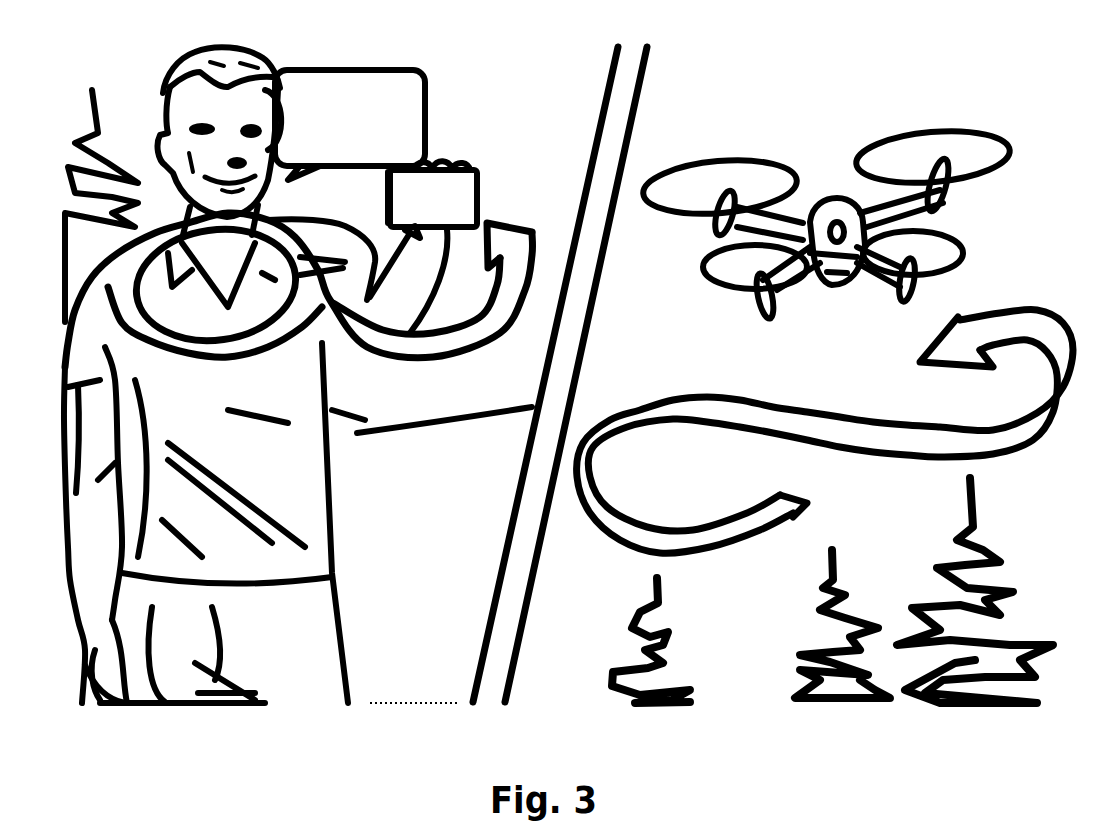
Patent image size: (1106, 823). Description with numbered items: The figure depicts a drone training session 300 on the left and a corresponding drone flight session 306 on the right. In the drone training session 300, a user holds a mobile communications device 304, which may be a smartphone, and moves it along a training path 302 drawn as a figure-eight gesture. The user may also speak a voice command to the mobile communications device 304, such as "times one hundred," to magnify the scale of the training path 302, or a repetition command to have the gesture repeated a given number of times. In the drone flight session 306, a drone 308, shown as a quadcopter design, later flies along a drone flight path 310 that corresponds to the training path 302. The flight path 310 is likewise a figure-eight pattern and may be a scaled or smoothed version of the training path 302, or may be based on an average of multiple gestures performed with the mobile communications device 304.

The drone training session 300 is at (432, 50).
The training path 302 is at (432, 355).
The mobile communications device 304 is at (481, 184).
The drone flight session 306 is at (865, 54).
The drone 308 is at (950, 180).
The drone flight path 310 is at (993, 444).